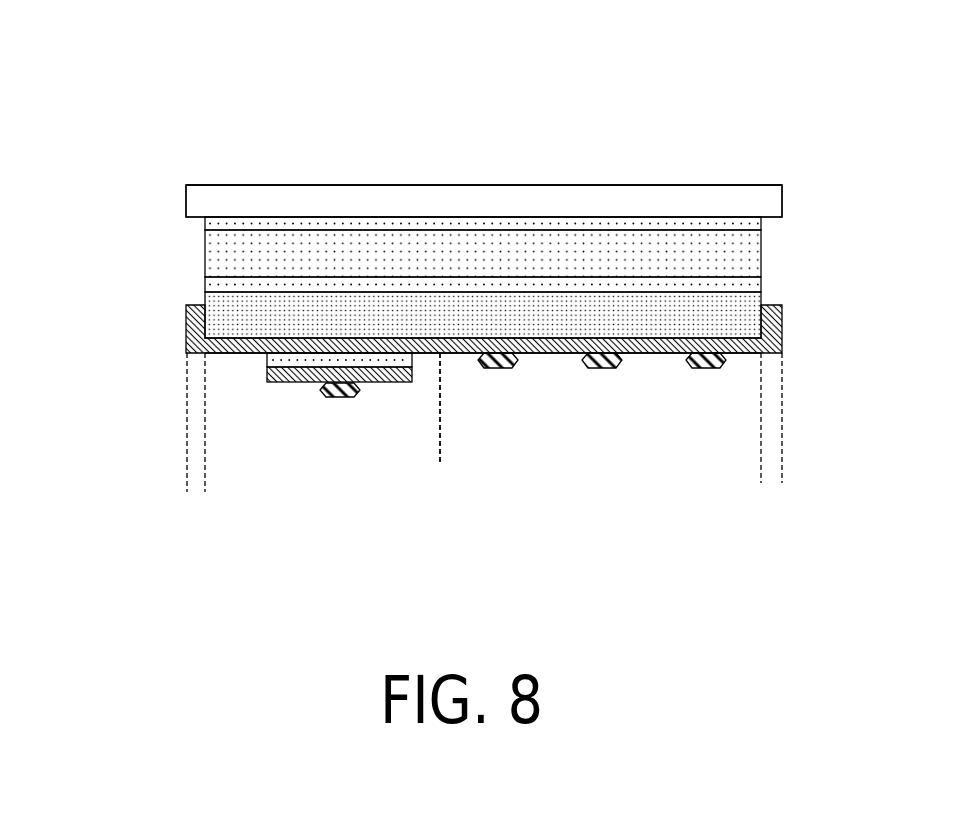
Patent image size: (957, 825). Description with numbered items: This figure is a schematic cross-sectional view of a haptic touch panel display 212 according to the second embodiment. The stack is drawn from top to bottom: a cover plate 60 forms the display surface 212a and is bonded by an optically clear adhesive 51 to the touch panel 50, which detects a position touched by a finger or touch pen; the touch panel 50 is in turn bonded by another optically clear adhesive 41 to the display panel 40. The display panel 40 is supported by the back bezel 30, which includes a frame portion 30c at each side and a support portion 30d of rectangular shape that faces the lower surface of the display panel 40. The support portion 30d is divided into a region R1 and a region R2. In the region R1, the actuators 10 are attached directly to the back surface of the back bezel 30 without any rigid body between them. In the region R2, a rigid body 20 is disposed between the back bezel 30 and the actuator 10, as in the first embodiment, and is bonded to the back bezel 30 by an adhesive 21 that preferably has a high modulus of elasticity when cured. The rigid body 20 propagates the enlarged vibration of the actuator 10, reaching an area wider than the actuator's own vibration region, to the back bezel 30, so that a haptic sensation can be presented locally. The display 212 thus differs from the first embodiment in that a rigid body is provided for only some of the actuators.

The haptic touch panel display 212 is at (827, 130).
The display surface 212a is at (548, 185).
The cover plate 60 is at (197, 197).
The optically clear adhesive 51 is at (207, 221).
The touch panel 50 is at (215, 258).
The optically clear adhesive 41 is at (215, 283).
The display panel 40 is at (215, 315).
The back bezel 30 is at (782, 545).
The frame portion 30c is at (205, 492).
The support portion 30d is at (761, 495).
The adhesive 21 is at (268, 356).
The rigid body 20 is at (267, 375).
The actuator 10 is at (322, 390).
The region R1 is at (761, 457).
The region R2 is at (440, 458).